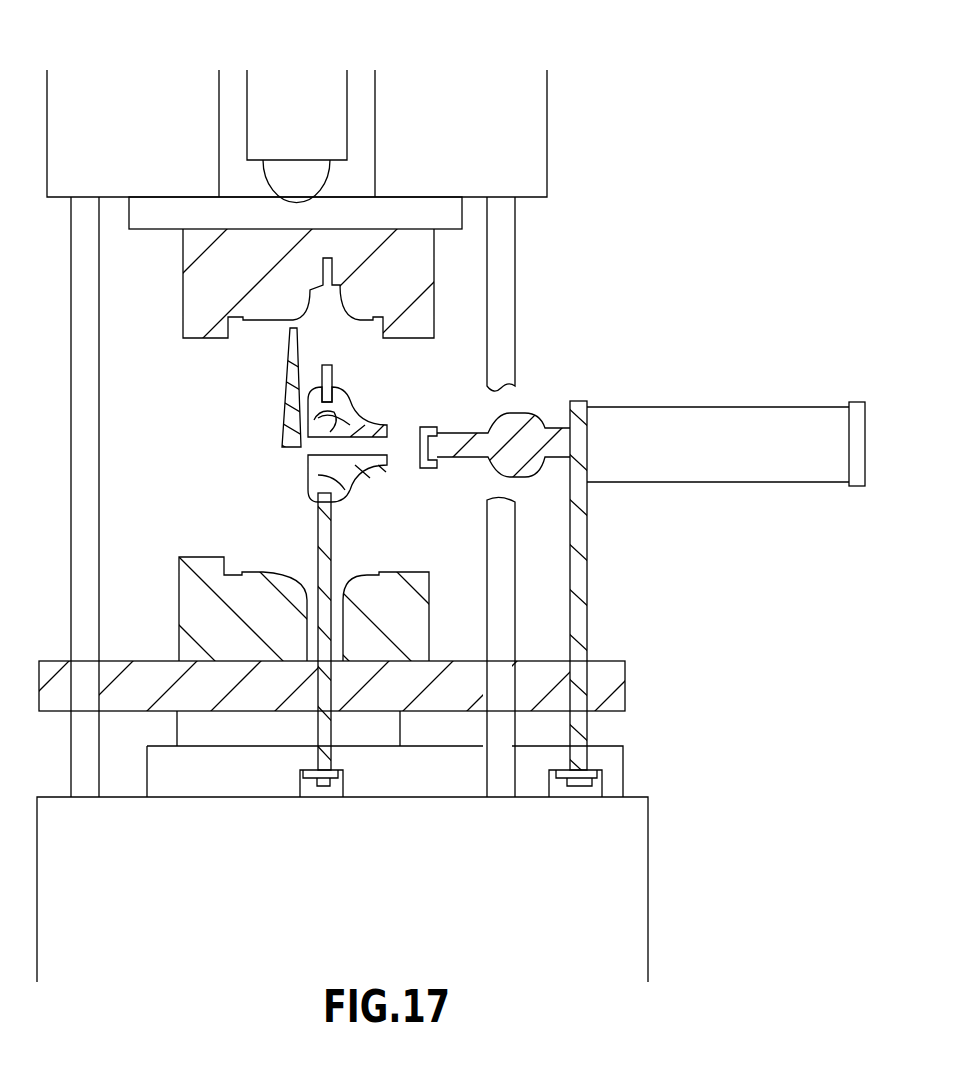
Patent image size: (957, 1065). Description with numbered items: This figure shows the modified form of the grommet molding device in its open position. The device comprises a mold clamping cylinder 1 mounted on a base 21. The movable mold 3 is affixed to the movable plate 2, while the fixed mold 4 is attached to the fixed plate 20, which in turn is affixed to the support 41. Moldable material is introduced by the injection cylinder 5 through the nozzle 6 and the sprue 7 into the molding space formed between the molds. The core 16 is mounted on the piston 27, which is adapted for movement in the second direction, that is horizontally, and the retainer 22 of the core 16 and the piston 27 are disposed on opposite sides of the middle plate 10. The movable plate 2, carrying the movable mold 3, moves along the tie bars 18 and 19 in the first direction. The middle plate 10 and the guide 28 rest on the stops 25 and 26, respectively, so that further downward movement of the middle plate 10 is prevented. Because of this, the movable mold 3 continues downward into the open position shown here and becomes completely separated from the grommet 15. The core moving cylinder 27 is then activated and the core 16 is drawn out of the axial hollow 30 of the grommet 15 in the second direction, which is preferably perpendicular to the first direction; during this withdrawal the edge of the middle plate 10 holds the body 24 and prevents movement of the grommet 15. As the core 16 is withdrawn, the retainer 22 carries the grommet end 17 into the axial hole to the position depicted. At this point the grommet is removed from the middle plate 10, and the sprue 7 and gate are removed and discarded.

The mold clamping cylinder 1 is at (375, 732).
The movable plate 2 is at (620, 682).
The movable mold 3 is at (415, 622).
The fixed mold 4 is at (430, 270).
The injection cylinder 5 is at (308, 100).
The nozzle 6 is at (315, 178).
The sprue 7 is at (292, 418).
The middle plate 10 is at (330, 372).
The grommet 15 is at (345, 405).
The core 16 is at (520, 432).
The grommet end 17 is at (388, 460).
The tie bar 18 is at (75, 632).
The tie bar 19 is at (502, 640).
The fixed plate 20 is at (450, 218).
The base 21 is at (381, 919).
The retainer 22 is at (418, 430).
The body 24 is at (312, 478).
The stop 25 is at (318, 752).
The stop 26 is at (580, 732).
The piston 27 is at (813, 420).
The guide 28 is at (590, 560).
The axial hollow 30 is at (330, 420).
The support 41 is at (535, 115).